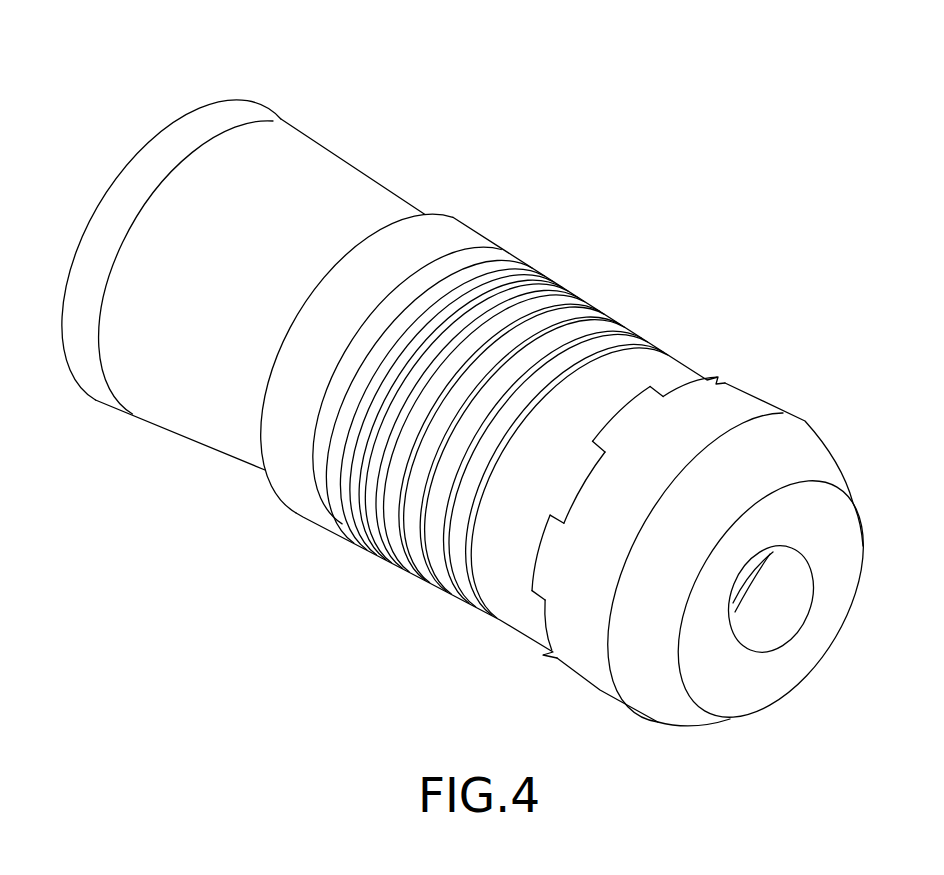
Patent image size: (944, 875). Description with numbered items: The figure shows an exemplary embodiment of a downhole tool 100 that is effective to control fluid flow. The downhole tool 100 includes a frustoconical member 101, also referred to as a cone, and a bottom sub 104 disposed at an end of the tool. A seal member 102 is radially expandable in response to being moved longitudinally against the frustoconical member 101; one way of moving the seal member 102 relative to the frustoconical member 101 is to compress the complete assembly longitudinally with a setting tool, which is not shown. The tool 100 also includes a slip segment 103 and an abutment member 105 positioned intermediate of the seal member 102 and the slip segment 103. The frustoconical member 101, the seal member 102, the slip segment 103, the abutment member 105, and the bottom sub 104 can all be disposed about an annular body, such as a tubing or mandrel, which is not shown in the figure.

The downhole tool 100 is at (113, 108).
The frustoconical member 101 is at (325, 187).
The seal member 102 is at (440, 235).
The slip segment 103 is at (537, 353).
The bottom sub 104 is at (720, 468).
The abutment member 105 is at (334, 455).